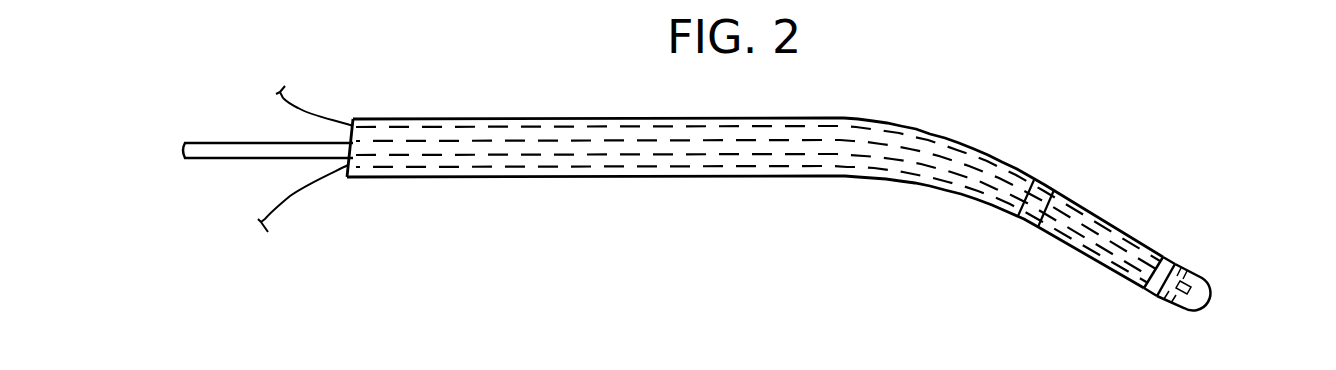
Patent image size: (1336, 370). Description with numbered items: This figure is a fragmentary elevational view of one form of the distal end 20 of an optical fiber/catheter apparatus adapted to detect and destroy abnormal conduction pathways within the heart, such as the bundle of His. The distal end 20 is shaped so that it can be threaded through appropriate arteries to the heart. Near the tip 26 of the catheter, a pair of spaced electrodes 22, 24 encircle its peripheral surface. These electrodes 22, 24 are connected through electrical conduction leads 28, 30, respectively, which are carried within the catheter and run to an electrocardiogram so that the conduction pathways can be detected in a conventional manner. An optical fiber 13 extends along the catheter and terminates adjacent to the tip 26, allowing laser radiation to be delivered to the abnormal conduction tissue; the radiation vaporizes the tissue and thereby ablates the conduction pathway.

The optical fiber 13 is at (252, 142).
The distal end 20 is at (515, 118).
The electrode 22 is at (1048, 187).
The electrode 24 is at (1172, 258).
The tip 26 is at (1210, 294).
The electrical conduction lead 28 is at (306, 111).
The electrical conduction lead 30 is at (294, 195).